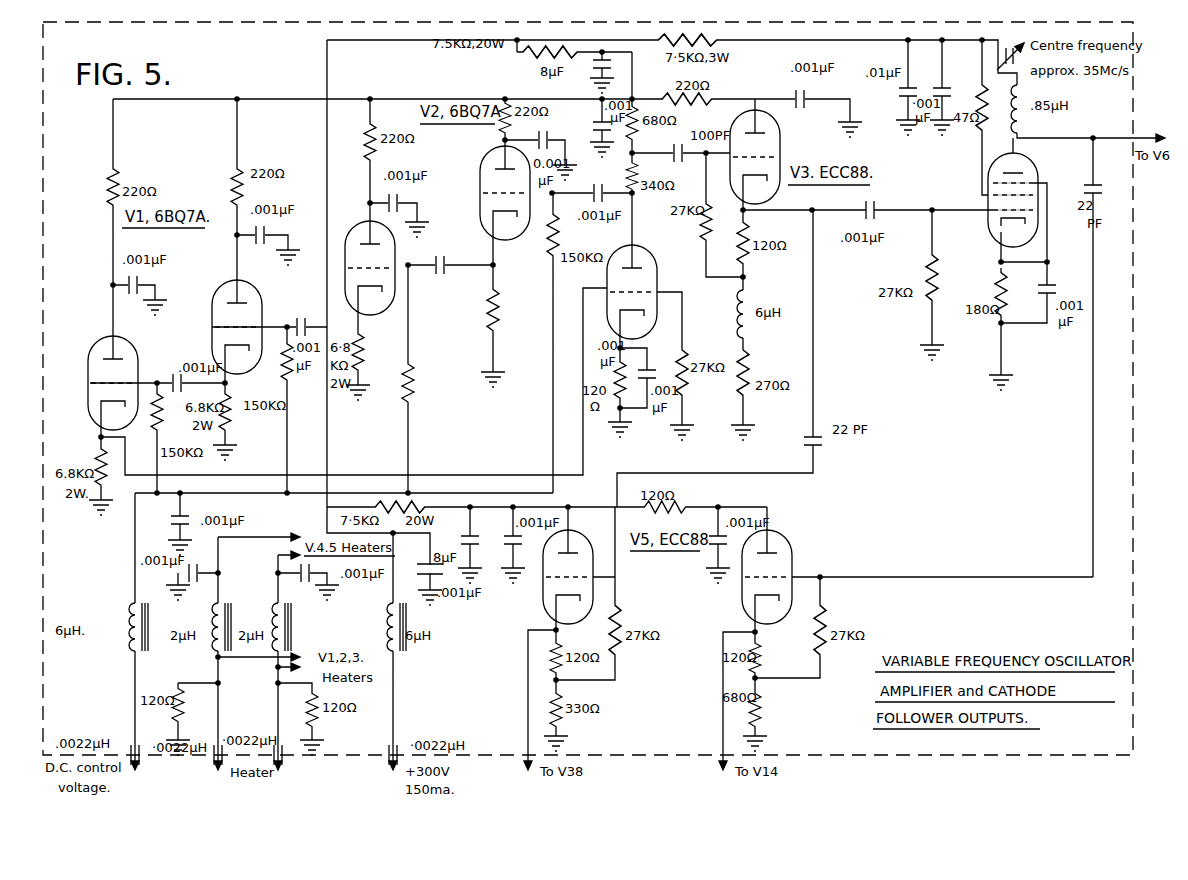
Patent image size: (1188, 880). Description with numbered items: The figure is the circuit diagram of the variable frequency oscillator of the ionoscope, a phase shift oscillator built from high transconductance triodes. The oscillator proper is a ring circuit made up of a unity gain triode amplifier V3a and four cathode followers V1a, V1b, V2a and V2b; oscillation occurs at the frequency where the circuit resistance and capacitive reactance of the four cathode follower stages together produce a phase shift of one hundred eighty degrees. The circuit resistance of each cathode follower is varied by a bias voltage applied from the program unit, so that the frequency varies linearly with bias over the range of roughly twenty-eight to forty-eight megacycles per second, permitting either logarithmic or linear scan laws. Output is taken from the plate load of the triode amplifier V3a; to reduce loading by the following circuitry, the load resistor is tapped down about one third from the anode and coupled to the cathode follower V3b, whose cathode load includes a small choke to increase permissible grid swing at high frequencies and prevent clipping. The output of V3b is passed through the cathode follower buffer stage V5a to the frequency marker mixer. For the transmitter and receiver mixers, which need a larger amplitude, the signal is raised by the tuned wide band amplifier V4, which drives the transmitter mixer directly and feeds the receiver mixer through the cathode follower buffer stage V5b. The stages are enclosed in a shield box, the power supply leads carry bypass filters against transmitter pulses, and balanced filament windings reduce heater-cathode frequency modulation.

The cathode follower V1a is at (133, 383).
The cathode follower V1b is at (256, 327).
The cathode follower V2a is at (364, 257).
The cathode follower V2b is at (510, 206).
The unity gain triode amplifier V3a is at (649, 292).
The cathode follower V3b is at (773, 157).
The tuned wide band amplifier V4 is at (985, 178).
The cathode follower buffer stage V5a is at (579, 568).
The cathode follower buffer stage V5b is at (786, 577).